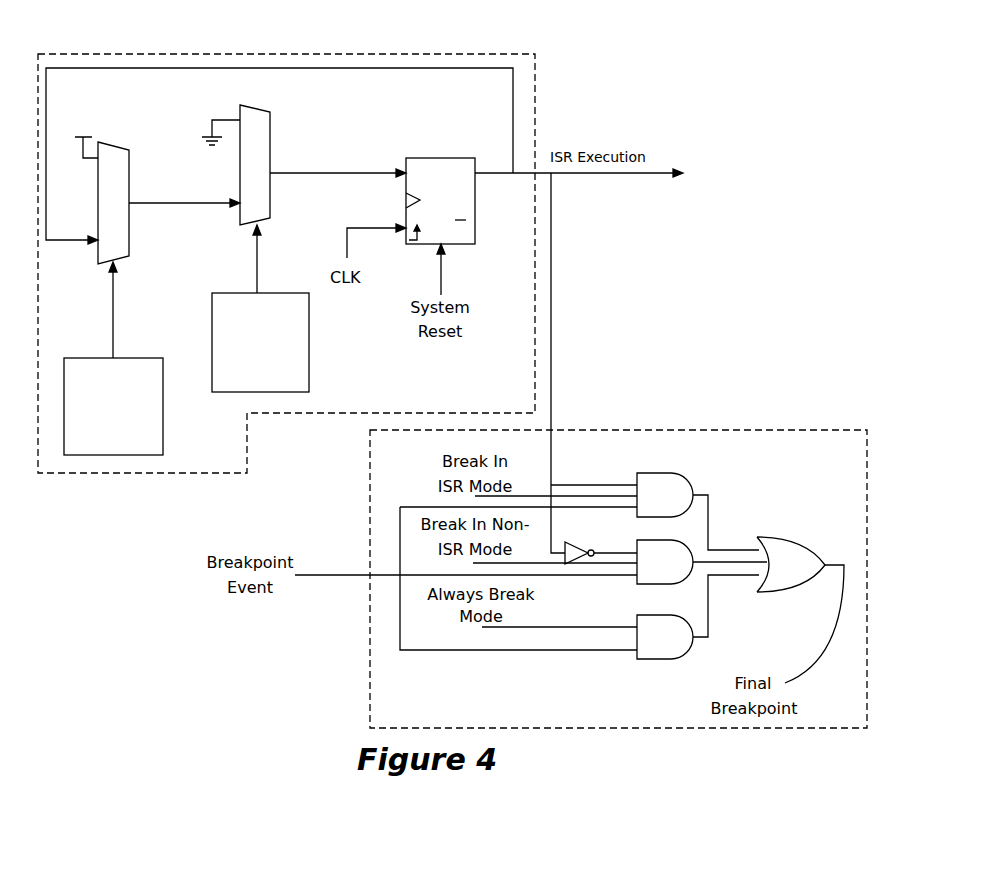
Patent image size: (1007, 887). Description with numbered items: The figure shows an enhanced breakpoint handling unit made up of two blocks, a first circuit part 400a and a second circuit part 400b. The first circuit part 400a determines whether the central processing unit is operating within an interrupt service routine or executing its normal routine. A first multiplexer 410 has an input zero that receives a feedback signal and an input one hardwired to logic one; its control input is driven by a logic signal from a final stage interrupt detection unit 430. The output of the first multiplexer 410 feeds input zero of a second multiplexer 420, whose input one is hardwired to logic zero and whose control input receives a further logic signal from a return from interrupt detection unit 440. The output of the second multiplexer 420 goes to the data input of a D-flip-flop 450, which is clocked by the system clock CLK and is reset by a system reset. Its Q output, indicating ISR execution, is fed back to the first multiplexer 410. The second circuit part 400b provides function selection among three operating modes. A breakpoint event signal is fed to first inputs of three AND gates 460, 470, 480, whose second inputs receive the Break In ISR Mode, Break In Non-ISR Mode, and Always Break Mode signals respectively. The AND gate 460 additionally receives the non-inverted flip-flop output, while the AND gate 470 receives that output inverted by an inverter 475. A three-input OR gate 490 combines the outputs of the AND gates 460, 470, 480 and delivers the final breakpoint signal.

The first circuit part 400a is at (506, 37).
The second circuit part 400b is at (642, 398).
The first multiplexer 410 is at (112, 145).
The second multiplexer 420 is at (255, 108).
The final stage interrupt detection unit 430 is at (163, 433).
The return from interrupt detection unit 440 is at (309, 352).
The D-flip-flop 450 is at (446, 158).
The AND gate 460 is at (656, 473).
The AND gate 470 is at (656, 546).
The inverter 475 is at (577, 542).
The AND gate 480 is at (656, 620).
The OR gate 490 is at (780, 538).